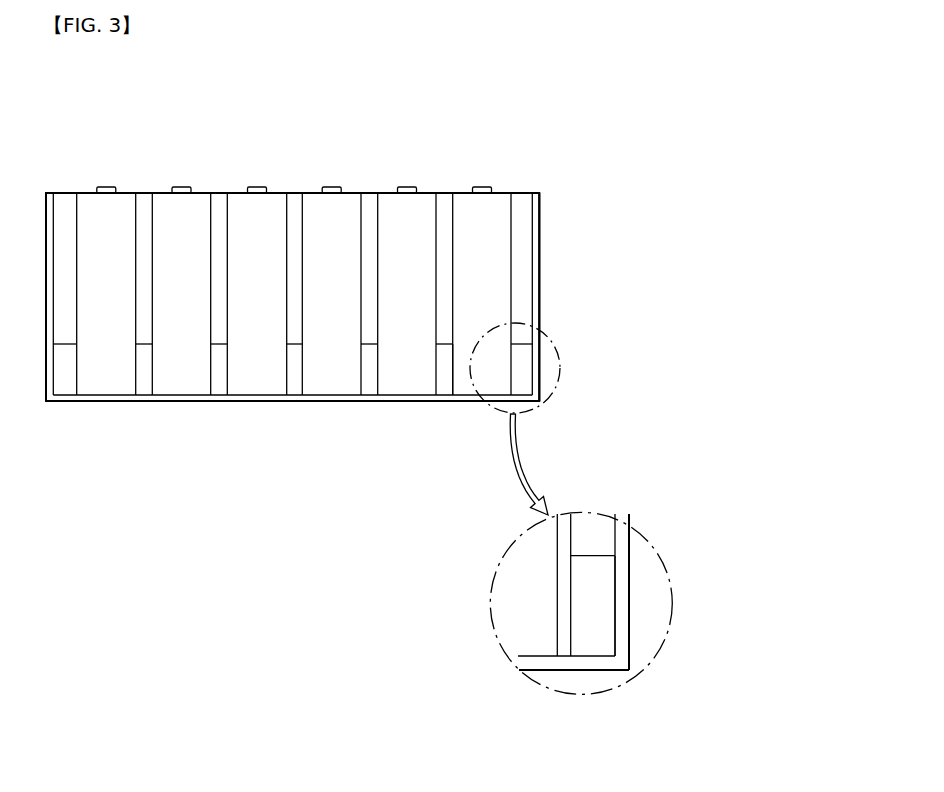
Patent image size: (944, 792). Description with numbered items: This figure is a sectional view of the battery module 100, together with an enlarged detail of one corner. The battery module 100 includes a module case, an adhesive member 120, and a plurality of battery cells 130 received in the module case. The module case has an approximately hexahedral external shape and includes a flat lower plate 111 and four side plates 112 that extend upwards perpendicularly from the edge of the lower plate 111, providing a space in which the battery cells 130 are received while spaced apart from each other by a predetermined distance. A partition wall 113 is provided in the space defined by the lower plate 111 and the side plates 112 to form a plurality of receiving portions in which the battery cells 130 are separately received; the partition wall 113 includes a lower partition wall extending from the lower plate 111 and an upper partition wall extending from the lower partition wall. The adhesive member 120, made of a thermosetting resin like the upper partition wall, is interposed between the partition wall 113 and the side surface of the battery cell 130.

The battery module 100 is at (223, 134).
The lower plate 111 is at (312, 398).
The side plate 112 is at (535, 208).
The partition wall 113 is at (795, 553).
The adhesive member 120 is at (560, 514).
The battery cell 130 is at (88, 207).